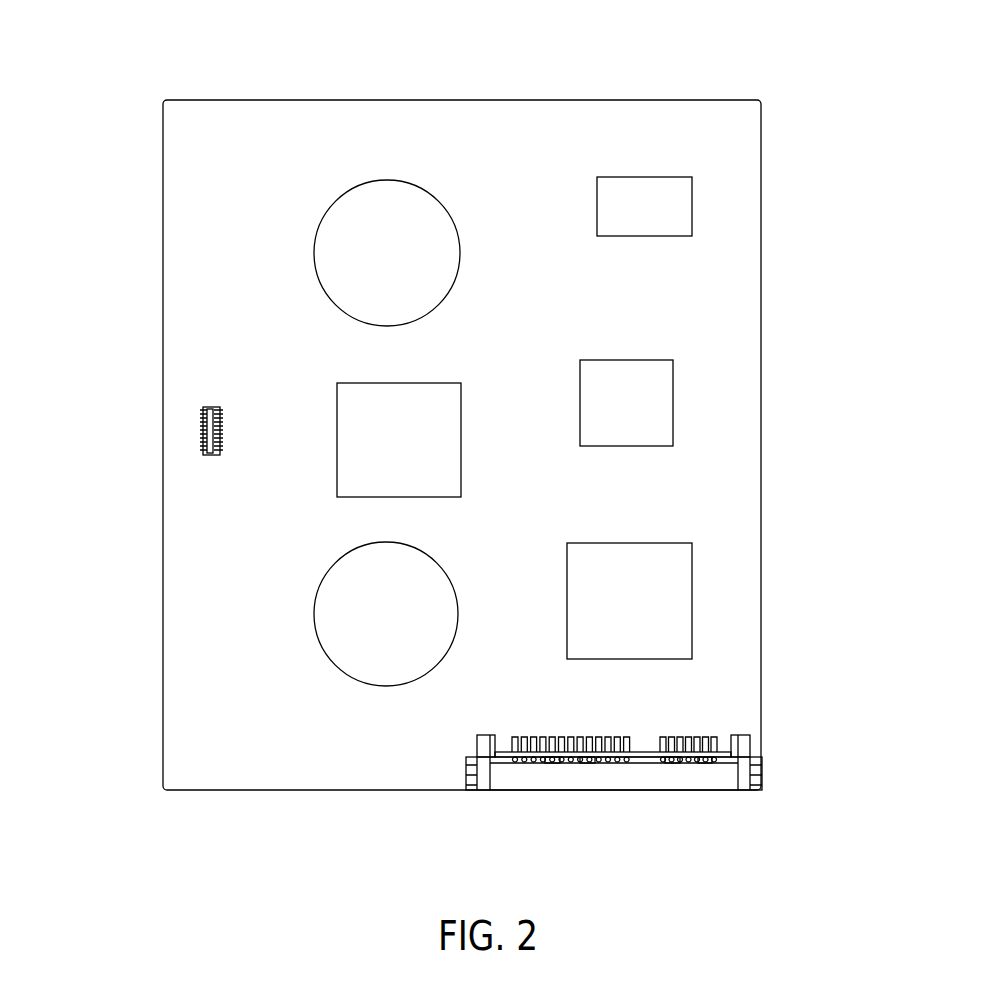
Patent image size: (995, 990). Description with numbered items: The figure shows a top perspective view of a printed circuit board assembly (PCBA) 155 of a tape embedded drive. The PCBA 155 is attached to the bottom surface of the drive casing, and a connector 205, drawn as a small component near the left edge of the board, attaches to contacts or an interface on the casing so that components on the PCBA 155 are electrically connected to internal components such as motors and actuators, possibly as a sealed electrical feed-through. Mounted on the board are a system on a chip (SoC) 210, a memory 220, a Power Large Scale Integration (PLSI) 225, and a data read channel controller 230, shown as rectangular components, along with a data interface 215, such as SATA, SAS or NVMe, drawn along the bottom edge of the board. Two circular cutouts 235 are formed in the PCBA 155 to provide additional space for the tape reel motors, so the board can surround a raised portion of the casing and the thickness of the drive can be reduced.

The printed circuit board assembly 155 is at (728, 125).
The connector 205 is at (203, 419).
The system on a chip 210 is at (667, 602).
The data interface 215 is at (628, 790).
The memory 220 is at (674, 201).
The Power Large Scale Integration 225 is at (657, 389).
The data read channel controller 230 is at (337, 397).
The cutout 235 is at (336, 245).